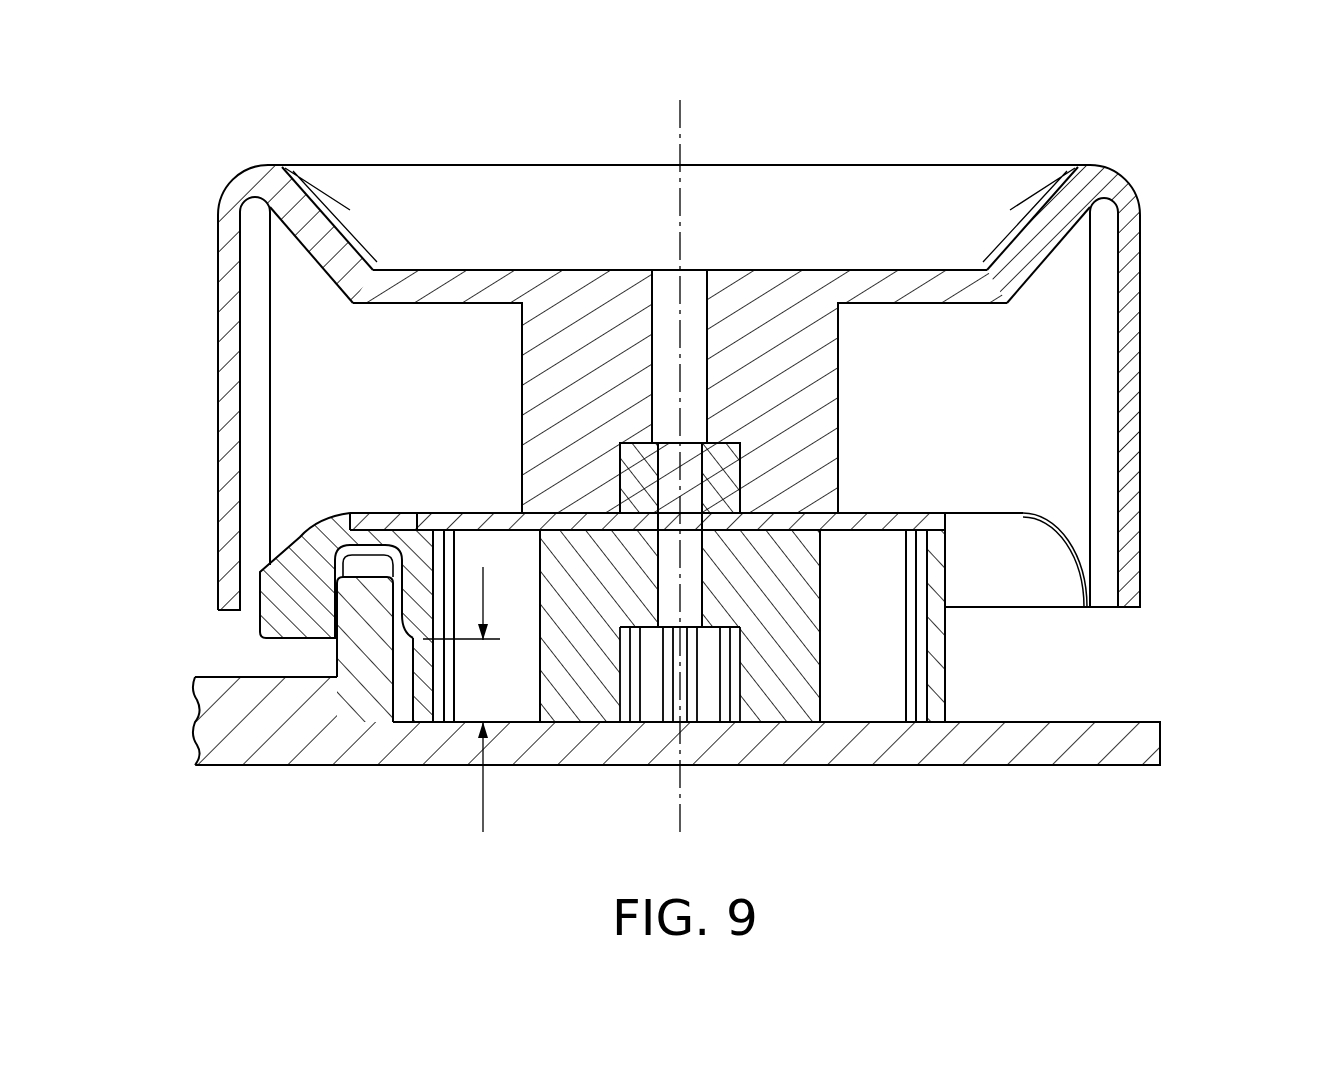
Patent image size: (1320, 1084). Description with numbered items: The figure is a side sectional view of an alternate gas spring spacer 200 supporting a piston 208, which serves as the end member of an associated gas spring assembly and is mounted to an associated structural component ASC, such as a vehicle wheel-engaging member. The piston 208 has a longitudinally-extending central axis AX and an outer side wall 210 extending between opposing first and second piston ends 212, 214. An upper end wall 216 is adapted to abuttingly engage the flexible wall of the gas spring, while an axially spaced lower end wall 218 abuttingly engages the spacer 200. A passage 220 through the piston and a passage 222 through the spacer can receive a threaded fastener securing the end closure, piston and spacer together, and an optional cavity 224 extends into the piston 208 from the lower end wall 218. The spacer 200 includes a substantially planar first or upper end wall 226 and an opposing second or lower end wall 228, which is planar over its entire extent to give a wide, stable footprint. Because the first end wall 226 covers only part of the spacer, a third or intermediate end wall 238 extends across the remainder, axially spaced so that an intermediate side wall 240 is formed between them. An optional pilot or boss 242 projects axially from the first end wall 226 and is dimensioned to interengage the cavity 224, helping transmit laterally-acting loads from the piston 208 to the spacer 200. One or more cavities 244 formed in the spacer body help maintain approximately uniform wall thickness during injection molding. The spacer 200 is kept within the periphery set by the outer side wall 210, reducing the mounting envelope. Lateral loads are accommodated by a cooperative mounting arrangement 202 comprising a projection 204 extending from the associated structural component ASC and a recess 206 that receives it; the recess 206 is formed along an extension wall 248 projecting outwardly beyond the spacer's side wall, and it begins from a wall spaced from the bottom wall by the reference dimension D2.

The spacer 200 is at (965, 660).
The cooperative mounting arrangement 202 is at (323, 648).
The projection 204 is at (377, 611).
The recess 206 is at (340, 557).
The piston 208 is at (1160, 130).
The outer side wall 210 is at (1140, 300).
The first piston end 212 is at (1160, 185).
The second piston end 214 is at (1160, 573).
The upper end wall 216 is at (888, 212).
The lower end wall 218 is at (963, 513).
The passage 220 is at (707, 355).
The passage 222 is at (705, 585).
The cavity 224 is at (742, 480).
The first end wall 226 is at (515, 528).
The second end wall 228 is at (772, 703).
The third end wall 238 is at (381, 543).
The intermediate side wall 240 is at (418, 518).
The boss 242 is at (637, 460).
The cavities 244 is at (518, 678).
The extension wall 248 is at (292, 604).
The central axis AX is at (688, 117).
The reference dimension D2 is at (483, 812).
The associated structural component ASC is at (1020, 767).